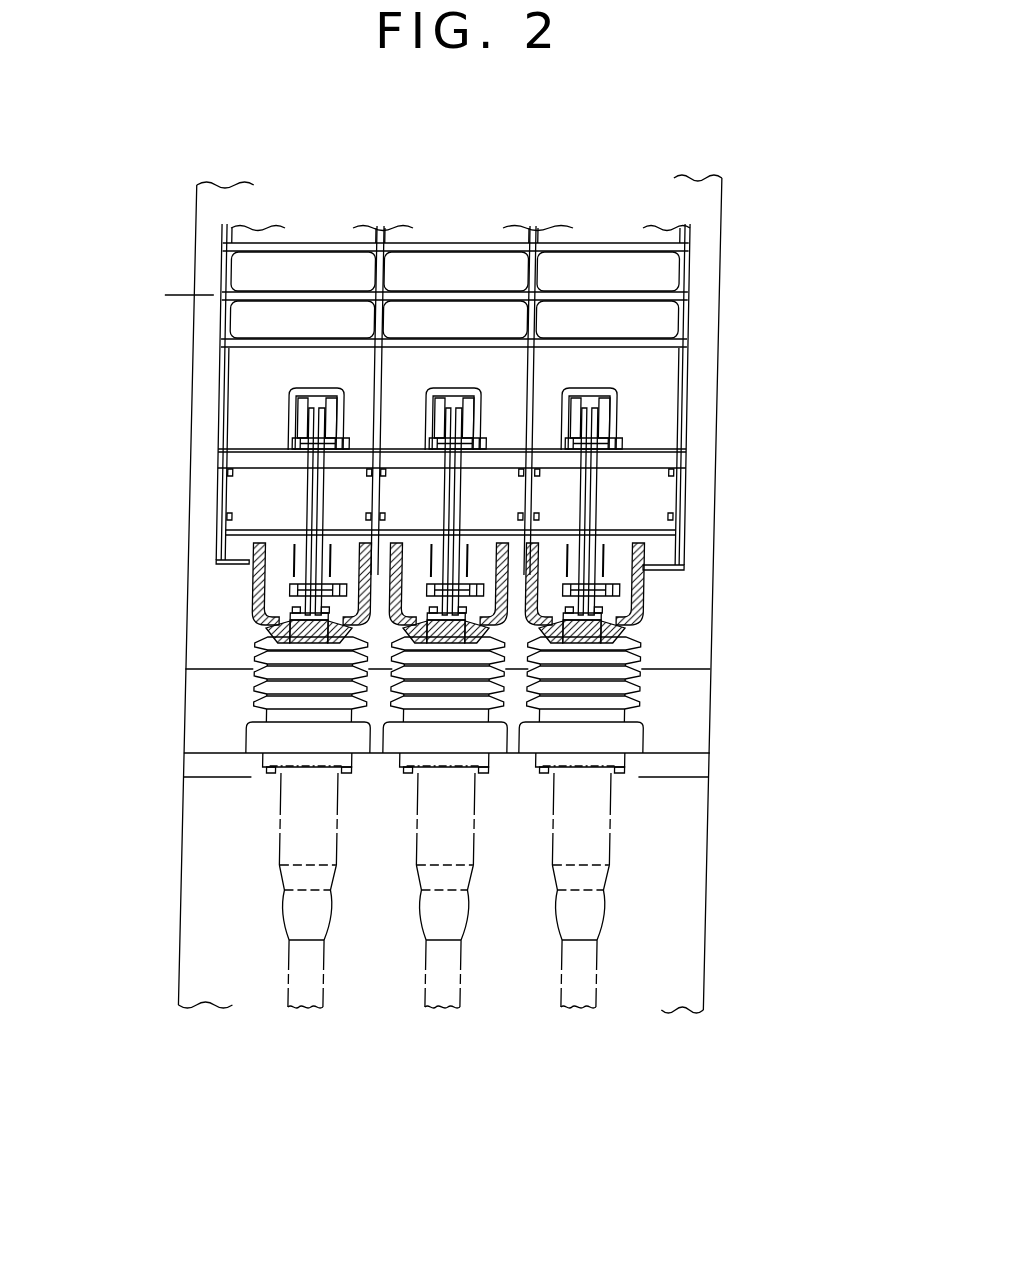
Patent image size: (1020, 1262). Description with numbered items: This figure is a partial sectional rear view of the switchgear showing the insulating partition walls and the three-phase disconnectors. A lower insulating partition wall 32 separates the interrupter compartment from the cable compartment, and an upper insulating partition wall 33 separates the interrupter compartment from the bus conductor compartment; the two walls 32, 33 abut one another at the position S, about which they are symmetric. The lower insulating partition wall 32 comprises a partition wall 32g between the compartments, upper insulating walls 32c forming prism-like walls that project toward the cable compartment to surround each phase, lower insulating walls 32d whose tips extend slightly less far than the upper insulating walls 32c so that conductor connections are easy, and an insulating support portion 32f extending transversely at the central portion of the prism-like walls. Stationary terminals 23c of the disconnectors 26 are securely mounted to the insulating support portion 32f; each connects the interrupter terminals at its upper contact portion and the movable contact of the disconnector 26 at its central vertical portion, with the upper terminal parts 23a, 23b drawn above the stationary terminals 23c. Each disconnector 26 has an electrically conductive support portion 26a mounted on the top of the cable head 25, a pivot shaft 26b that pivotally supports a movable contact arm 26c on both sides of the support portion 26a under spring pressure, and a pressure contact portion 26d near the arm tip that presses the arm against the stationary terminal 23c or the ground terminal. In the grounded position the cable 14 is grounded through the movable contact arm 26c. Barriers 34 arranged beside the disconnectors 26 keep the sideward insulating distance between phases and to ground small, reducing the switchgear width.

The cable 14 is at (614, 857).
The upper terminal bracket 23a is at (293, 386).
The upper terminal bracket 23b is at (611, 419).
The stationary terminal 23c is at (611, 451).
The cable head 25 is at (646, 735).
The disconnector 26 is at (648, 588).
The electrically conductive support portion 26a is at (636, 643).
The pivot shaft 26b is at (640, 623).
The movable contact arm 26c is at (609, 549).
The pressure contact portion 26d is at (600, 500).
The lower insulating partition wall 32 is at (689, 321).
The upper insulating wall 32c is at (448, 342).
The lower insulating wall 32d is at (480, 390).
The insulating support portion 32f is at (259, 503).
The partition wall 32g is at (404, 323).
The upper insulating partition wall 33 is at (689, 273).
The barrier 34 is at (253, 561).
The abutting position S is at (176, 292).